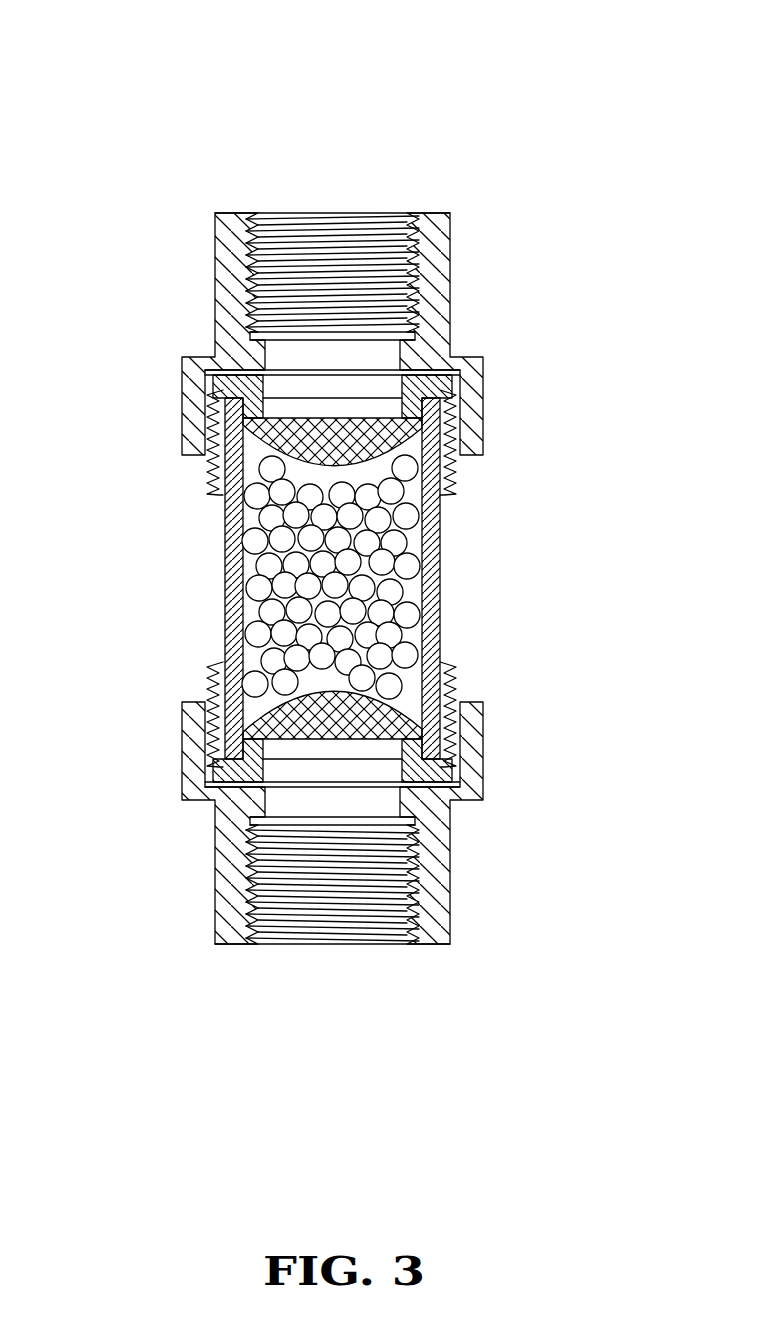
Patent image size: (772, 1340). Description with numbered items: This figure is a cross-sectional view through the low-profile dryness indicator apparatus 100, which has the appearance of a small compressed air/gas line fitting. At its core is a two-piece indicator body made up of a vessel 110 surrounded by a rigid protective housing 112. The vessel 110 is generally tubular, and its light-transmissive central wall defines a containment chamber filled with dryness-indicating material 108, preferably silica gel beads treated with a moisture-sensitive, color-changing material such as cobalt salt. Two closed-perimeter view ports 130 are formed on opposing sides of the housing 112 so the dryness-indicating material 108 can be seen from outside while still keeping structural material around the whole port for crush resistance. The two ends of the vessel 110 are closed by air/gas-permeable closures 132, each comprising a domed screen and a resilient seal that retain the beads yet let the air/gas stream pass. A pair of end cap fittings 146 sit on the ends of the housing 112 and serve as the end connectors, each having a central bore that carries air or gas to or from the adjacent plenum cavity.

The low-profile dryness indicator apparatus 100 is at (120, 124).
The dryness-indicating material 108 is at (363, 625).
The vessel 110 is at (454, 530).
The rigid protective housing 112 is at (472, 683).
The closed-perimeter view port 130 is at (213, 662).
The air/gas-permeable closure 132 is at (348, 392).
The end cap fitting 146 is at (470, 245).